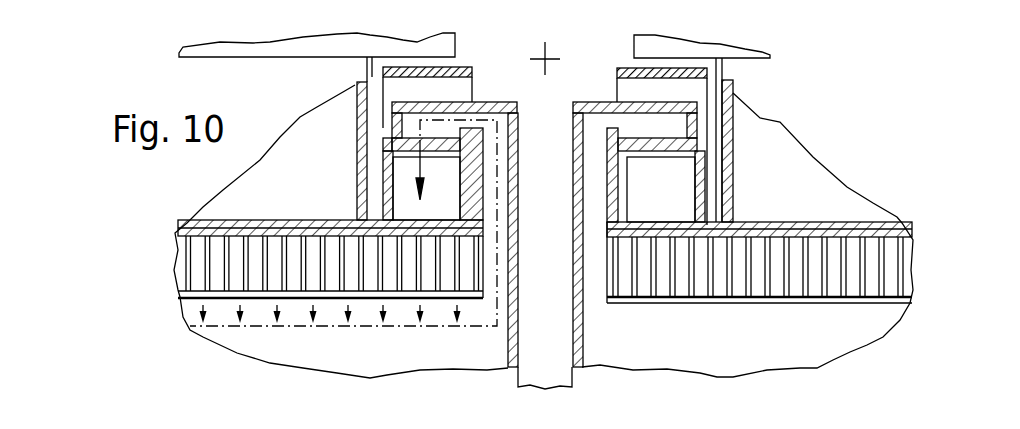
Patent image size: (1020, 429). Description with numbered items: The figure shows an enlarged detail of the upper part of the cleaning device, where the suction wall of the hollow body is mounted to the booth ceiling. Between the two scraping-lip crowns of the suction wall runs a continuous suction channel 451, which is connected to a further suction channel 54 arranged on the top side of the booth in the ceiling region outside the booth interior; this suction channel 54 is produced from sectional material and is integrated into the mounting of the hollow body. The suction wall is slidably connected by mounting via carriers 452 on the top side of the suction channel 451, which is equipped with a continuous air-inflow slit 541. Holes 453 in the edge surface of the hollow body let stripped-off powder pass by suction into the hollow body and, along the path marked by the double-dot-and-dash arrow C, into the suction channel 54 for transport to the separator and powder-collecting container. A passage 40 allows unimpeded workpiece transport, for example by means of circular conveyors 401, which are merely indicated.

The passage 40 is at (510, 337).
The circular conveyor 401 is at (548, 55).
The suction channel 451 is at (593, 280).
The carrier 452 is at (580, 330).
The hole 453 is at (707, 310).
The suction channel 54 is at (668, 197).
The air-inflow slit 541 is at (663, 153).